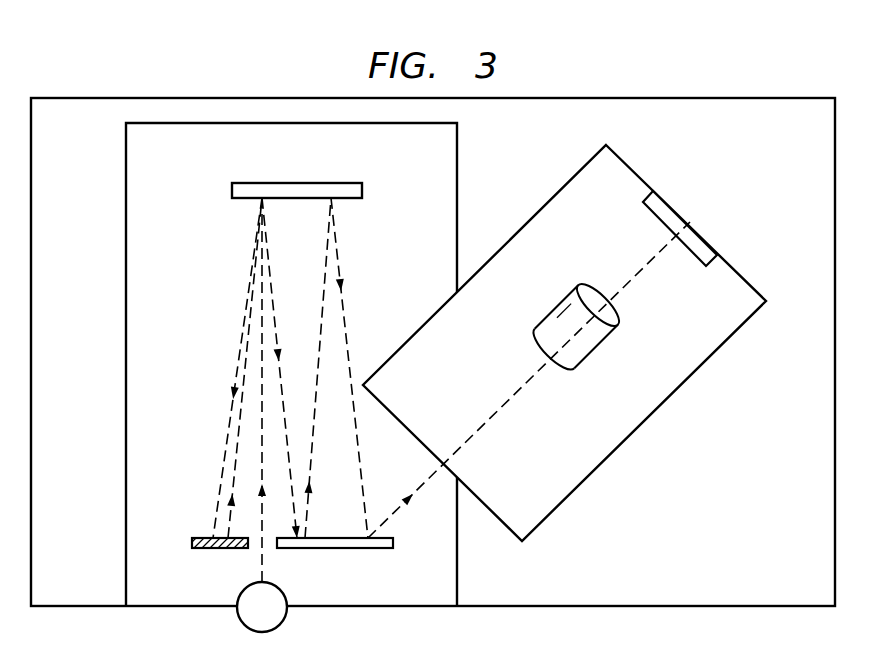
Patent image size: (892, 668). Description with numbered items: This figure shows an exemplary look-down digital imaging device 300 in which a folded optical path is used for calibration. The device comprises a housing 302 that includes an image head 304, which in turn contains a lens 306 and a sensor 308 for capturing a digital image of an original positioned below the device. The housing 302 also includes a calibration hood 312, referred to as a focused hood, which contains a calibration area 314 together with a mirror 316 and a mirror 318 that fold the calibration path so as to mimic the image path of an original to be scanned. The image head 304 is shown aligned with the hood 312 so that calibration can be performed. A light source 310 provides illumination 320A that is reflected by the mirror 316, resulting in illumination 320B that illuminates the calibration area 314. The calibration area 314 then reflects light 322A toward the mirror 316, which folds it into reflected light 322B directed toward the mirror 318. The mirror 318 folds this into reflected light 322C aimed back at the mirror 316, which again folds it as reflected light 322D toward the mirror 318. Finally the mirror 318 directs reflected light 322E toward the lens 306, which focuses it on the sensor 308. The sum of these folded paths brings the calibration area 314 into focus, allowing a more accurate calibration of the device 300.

The look-down digital imaging device 300 is at (172, 80).
The housing 302 is at (658, 97).
The image head 304 is at (644, 422).
The lens 306 is at (604, 348).
The sensor 308 is at (656, 219).
The light source 310 is at (241, 620).
The calibration hood 312 is at (125, 235).
The calibration area 314 is at (215, 550).
The mirror 316 is at (296, 182).
The mirror 318 is at (362, 550).
The illumination 320A is at (262, 564).
The illumination 320B is at (229, 418).
The light 322A is at (234, 462).
The reflected light 322B is at (273, 313).
The reflected light 322C is at (328, 257).
The reflected light 322D is at (345, 312).
The reflected light 322E is at (495, 410).